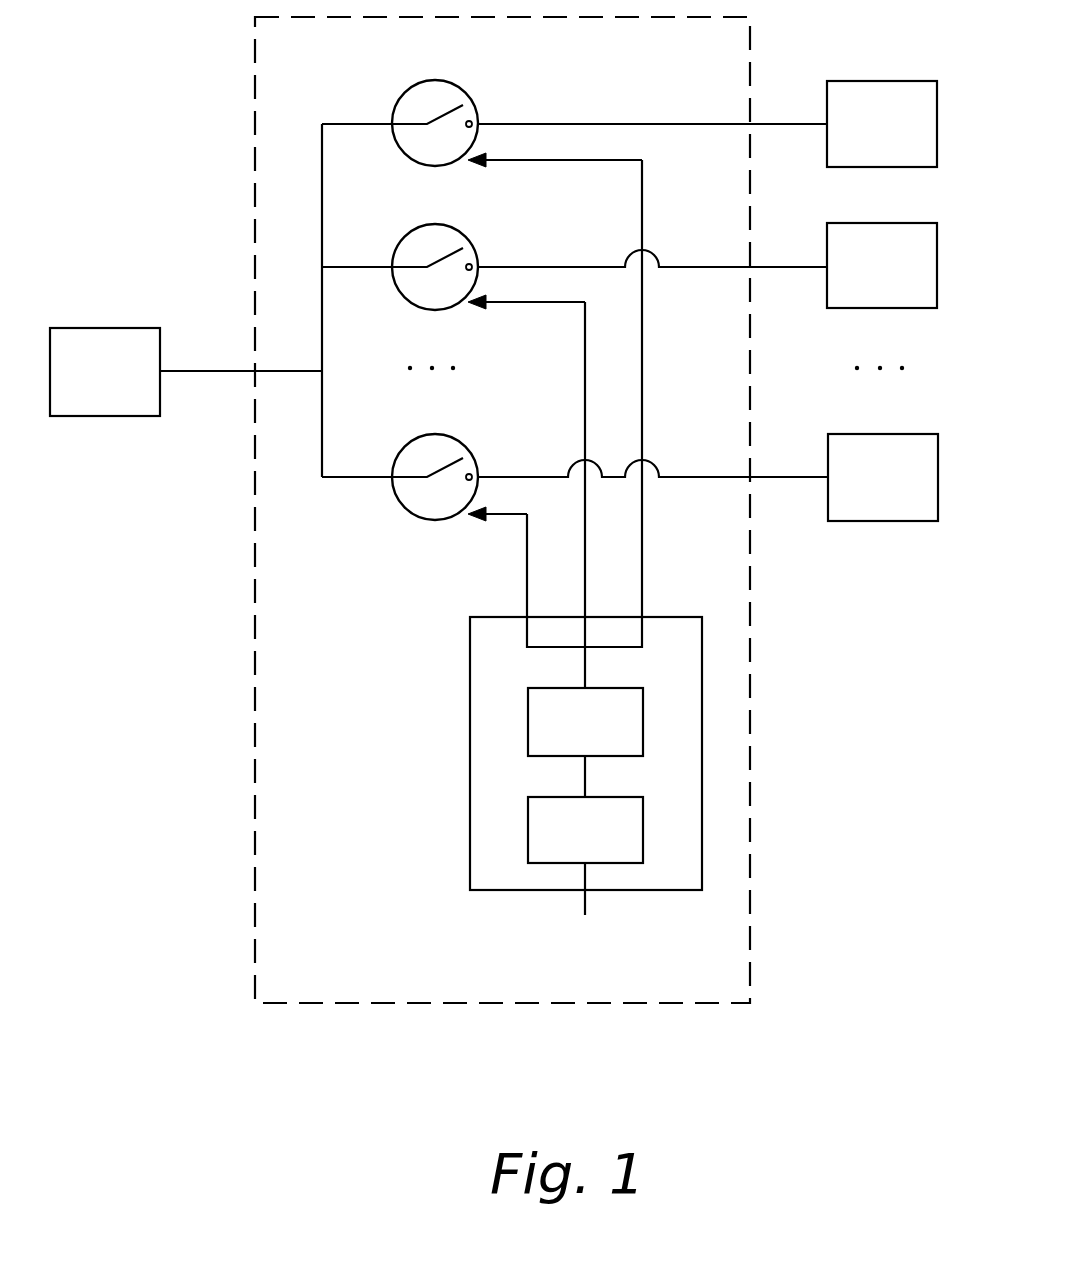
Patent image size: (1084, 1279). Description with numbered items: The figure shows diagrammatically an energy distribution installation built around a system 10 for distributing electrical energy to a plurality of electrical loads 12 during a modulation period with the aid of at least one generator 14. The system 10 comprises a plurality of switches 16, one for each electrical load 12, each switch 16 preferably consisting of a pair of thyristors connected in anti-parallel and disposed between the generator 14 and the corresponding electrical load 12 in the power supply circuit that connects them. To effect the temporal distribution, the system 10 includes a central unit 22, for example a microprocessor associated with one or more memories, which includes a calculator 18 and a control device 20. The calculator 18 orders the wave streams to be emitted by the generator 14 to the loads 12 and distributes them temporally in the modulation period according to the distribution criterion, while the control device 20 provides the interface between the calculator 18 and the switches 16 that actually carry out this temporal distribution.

The system for distribution of electrical energy 10 is at (750, 845).
The electrical load 12 is at (882, 301).
The generator 14 is at (105, 372).
The switch 16 is at (462, 88).
The calculator 18 is at (585, 830).
The control device 20 is at (585, 722).
The central unit 22 is at (654, 788).